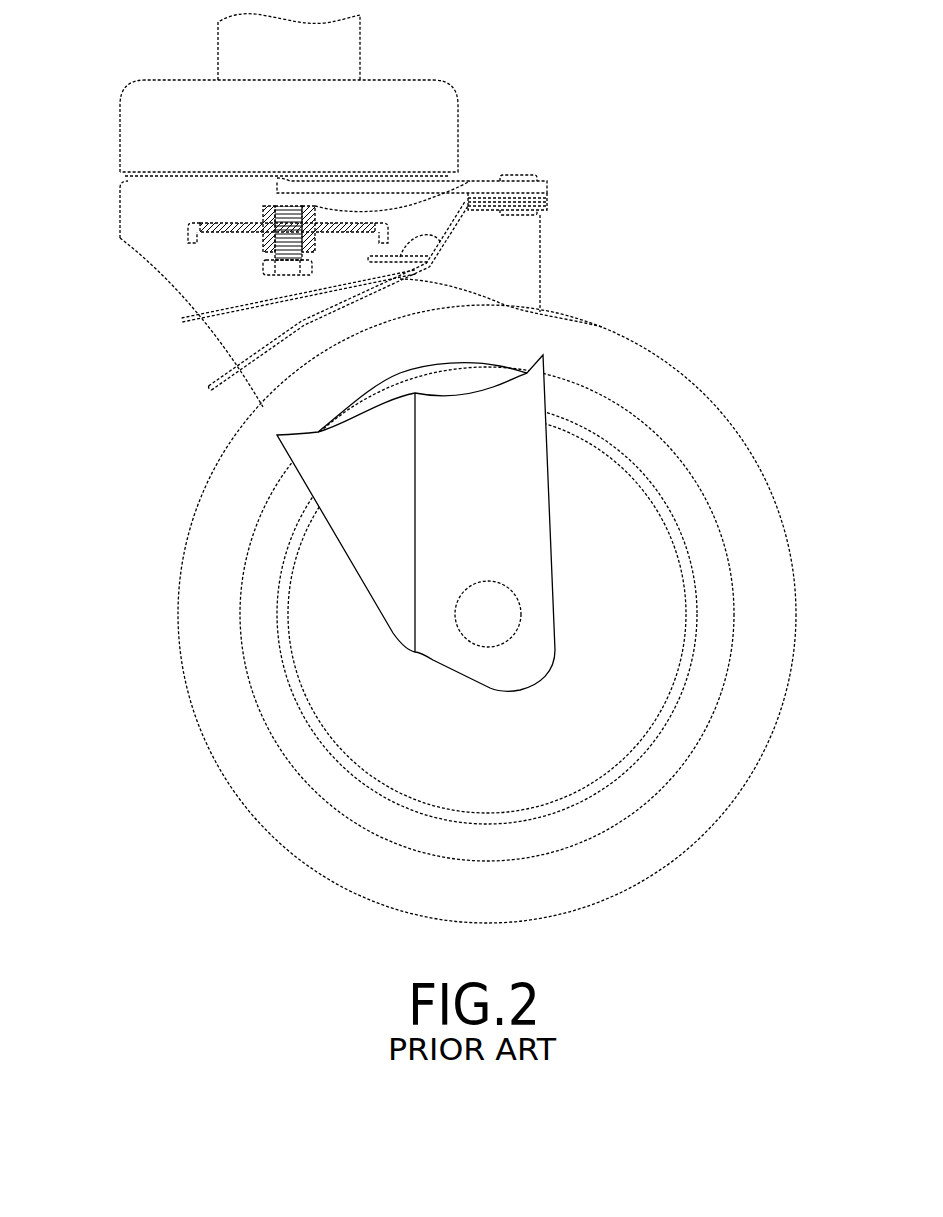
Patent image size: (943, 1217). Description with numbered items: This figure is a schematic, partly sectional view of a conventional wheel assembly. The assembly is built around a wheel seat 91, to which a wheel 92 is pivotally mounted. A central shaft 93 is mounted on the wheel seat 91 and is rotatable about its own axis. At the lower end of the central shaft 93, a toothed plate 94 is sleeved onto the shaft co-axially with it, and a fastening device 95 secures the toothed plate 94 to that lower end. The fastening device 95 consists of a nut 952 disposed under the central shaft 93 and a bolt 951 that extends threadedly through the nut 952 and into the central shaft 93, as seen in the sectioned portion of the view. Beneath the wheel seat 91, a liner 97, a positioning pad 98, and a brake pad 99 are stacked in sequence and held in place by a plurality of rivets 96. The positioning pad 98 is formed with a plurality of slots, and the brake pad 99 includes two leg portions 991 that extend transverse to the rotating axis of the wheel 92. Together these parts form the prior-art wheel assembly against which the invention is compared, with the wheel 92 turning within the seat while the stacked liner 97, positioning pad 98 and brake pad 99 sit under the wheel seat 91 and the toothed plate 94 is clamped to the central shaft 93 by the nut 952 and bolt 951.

The wheel seat 91 is at (517, 250).
The wheel 92 is at (740, 758).
The central shaft 93 is at (345, 43).
The toothed plate 94 is at (263, 204).
The fastening device 95 is at (330, 254).
The bolt 951 is at (263, 270).
The nut 952 is at (263, 245).
The rivets 96 is at (517, 177).
The liner 97 is at (540, 198).
The positioning pad 98 is at (441, 240).
The brake pad 99 is at (540, 312).
The leg portions 991 is at (210, 387).